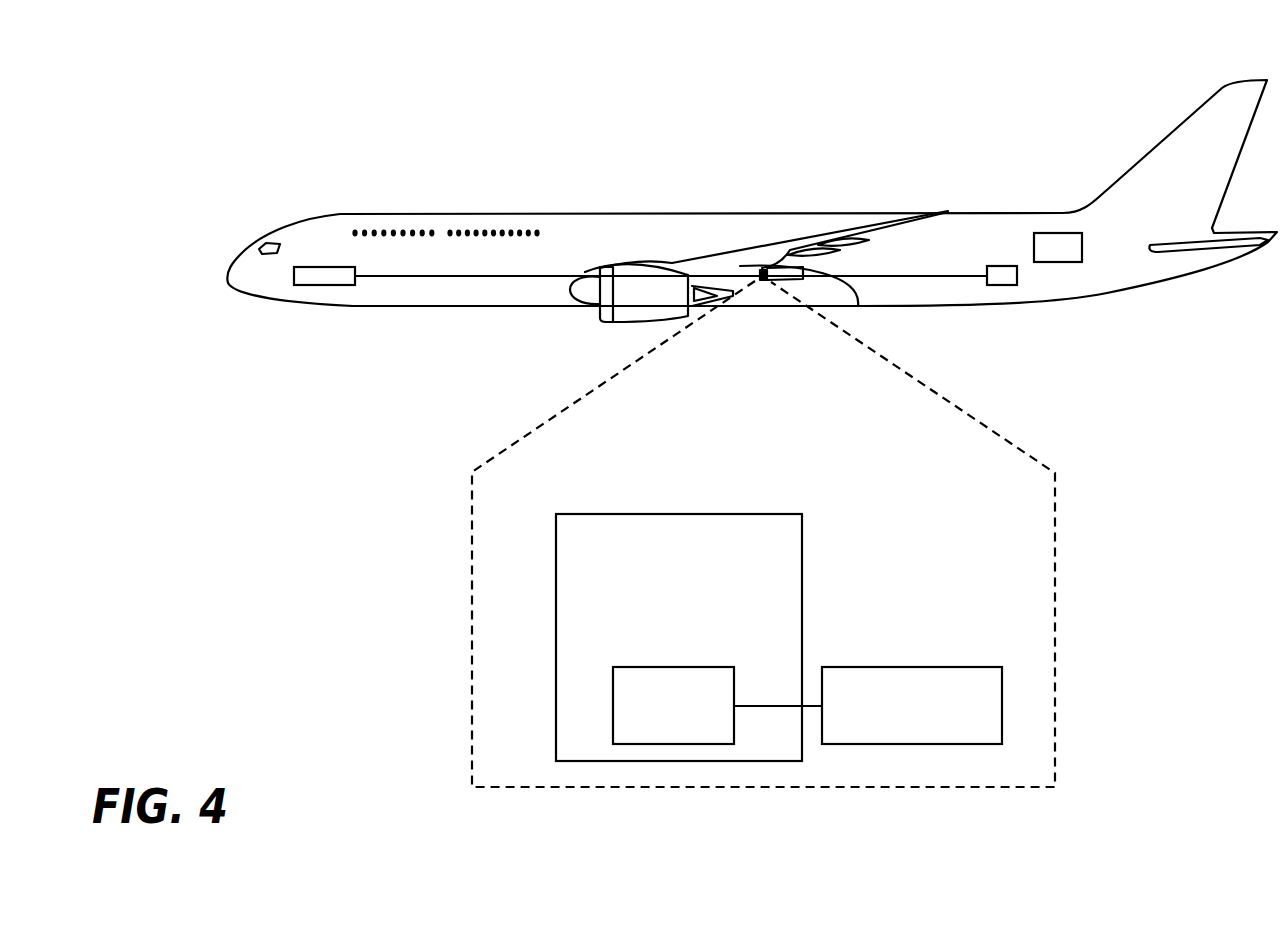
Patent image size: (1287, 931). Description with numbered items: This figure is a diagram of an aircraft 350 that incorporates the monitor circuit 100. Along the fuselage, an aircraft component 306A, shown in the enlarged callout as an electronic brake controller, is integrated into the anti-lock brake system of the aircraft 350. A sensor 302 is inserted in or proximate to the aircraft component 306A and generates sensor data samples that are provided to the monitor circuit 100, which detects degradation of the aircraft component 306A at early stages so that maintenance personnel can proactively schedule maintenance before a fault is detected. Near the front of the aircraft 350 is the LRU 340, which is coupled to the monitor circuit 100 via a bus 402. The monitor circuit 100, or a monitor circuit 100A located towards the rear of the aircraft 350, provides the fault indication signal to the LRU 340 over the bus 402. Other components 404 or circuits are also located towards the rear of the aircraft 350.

The aircraft 350 is at (693, 213).
The LRU 340 is at (328, 266).
The bus 402 is at (413, 278).
The other components 404 is at (1053, 233).
The monitor circuit 100A is at (1000, 285).
The aircraft component 306A is at (735, 514).
The sensor 302 is at (695, 734).
The monitor circuit 100 is at (975, 734).